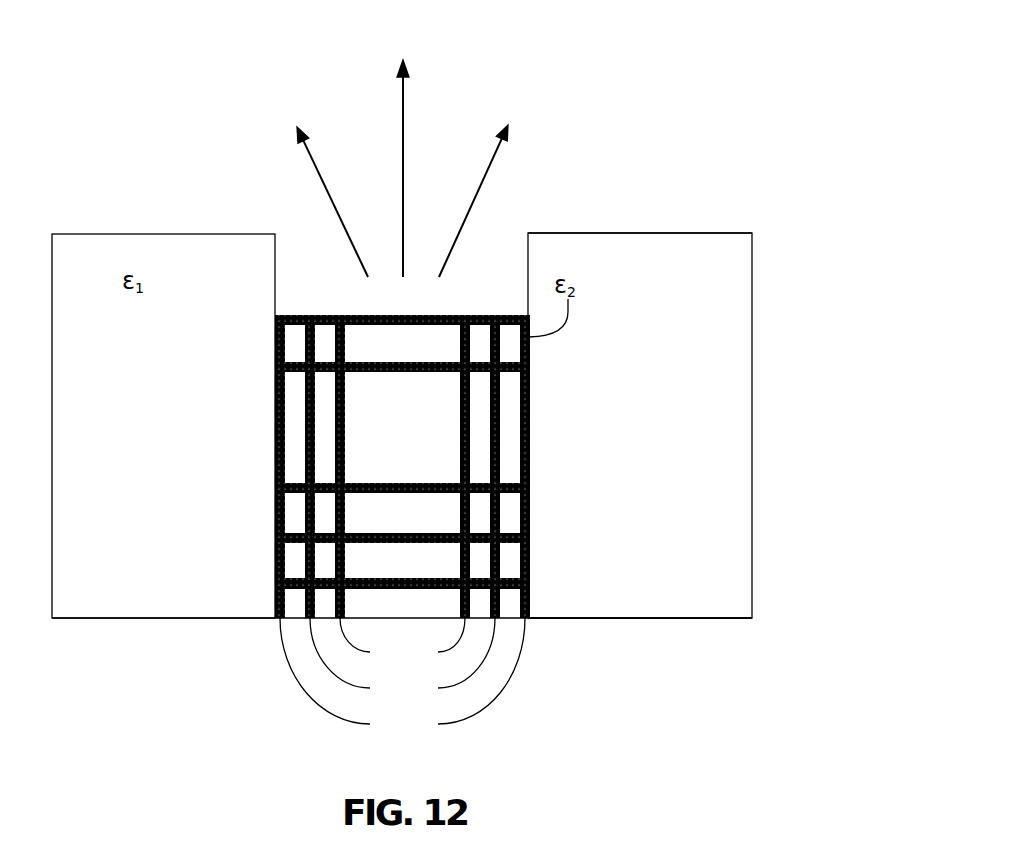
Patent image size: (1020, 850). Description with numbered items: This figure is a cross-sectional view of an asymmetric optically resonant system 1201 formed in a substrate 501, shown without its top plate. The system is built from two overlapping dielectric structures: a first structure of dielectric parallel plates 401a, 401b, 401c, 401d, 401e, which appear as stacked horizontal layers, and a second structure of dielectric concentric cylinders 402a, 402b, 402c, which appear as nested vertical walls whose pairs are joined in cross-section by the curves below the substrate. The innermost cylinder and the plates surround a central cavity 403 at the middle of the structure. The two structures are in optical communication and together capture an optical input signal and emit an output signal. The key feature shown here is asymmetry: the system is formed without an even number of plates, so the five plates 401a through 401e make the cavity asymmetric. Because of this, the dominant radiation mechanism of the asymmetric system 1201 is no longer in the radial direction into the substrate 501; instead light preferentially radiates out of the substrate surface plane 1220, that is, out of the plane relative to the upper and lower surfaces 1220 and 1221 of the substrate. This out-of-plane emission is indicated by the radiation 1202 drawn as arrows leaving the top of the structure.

The asymmetric optically resonant system 1201 is at (598, 112).
The radiation 1202 is at (420, 58).
The substrate surface plane 1220 is at (706, 232).
The substrate surface 1221 is at (673, 620).
The substrate 501 is at (728, 443).
The dielectric parallel plate 401a is at (275, 585).
The dielectric parallel plate 401b is at (275, 538).
The dielectric parallel plate 401c is at (275, 488).
The dielectric parallel plate 401d is at (275, 367).
The dielectric parallel plate 401e is at (275, 320).
The dielectric concentric cylinder 402a is at (402, 489).
The dielectric concentric cylinder 402b is at (402, 507).
The dielectric concentric cylinder 402c is at (402, 524).
The central cavity 403 is at (420, 467).